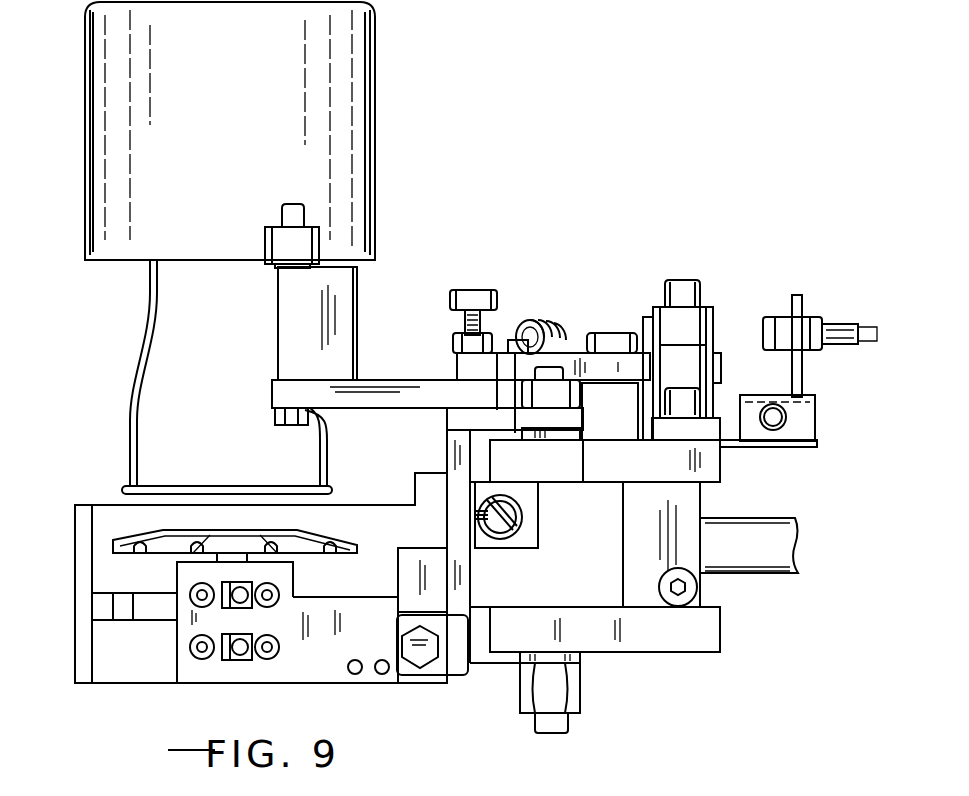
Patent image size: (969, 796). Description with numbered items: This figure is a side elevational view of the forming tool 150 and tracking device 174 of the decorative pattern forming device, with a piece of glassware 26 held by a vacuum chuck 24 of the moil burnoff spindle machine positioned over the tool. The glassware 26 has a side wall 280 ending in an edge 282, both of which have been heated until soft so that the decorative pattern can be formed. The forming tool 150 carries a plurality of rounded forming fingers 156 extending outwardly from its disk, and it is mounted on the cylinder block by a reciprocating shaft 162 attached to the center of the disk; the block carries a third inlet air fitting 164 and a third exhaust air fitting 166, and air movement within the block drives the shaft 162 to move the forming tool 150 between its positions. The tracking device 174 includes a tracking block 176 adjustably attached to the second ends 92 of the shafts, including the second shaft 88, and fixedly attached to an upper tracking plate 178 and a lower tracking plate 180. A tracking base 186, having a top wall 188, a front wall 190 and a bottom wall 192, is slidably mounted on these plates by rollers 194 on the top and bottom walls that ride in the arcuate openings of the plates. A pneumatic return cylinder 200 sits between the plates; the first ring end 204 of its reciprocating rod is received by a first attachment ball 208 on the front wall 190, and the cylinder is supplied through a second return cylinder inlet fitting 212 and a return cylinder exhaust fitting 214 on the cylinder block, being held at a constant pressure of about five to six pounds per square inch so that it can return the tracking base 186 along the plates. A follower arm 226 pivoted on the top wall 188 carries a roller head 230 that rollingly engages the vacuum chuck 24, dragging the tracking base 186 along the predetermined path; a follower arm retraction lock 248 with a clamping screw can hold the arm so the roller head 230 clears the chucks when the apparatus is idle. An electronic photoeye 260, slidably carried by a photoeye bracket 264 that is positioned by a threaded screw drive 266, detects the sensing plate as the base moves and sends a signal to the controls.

The vacuum chuck 24 is at (358, 72).
The glassware 26 is at (150, 296).
The second shaft 88 is at (778, 568).
The second ends 92 is at (752, 533).
The forming tool 150 is at (132, 533).
The forming fingers 156 is at (275, 555).
The reciprocating shaft 162 is at (220, 563).
The third inlet air fitting 164 is at (252, 588).
The third exhaust air fitting 166 is at (240, 653).
The tracking device 174 is at (707, 666).
The tracking block 176 is at (643, 552).
The upper tracking plate 178 is at (583, 470).
The lower tracking plate 180 is at (605, 640).
The tracking base 186 is at (455, 427).
The top wall 188 is at (487, 420).
The front wall 190 is at (447, 455).
The bottom wall 192 is at (497, 673).
The rollers 194 is at (578, 448).
The pneumatic return cylinder 200 is at (500, 542).
The first ring end 204 is at (509, 498).
The first attachment ball 208 is at (477, 515).
The second return cylinder inlet fitting 212 is at (345, 674).
The return cylinder exhaust fitting 214 is at (383, 676).
The follower arm 226 is at (272, 397).
The roller head 230 is at (267, 228).
The follower arm retraction lock 248 is at (498, 357).
The electronic photoeye 260 is at (777, 316).
The photoeye bracket 264 is at (807, 362).
The threaded screw drive 266 is at (777, 418).
The side wall 280 is at (150, 332).
The edge 282 is at (122, 486).